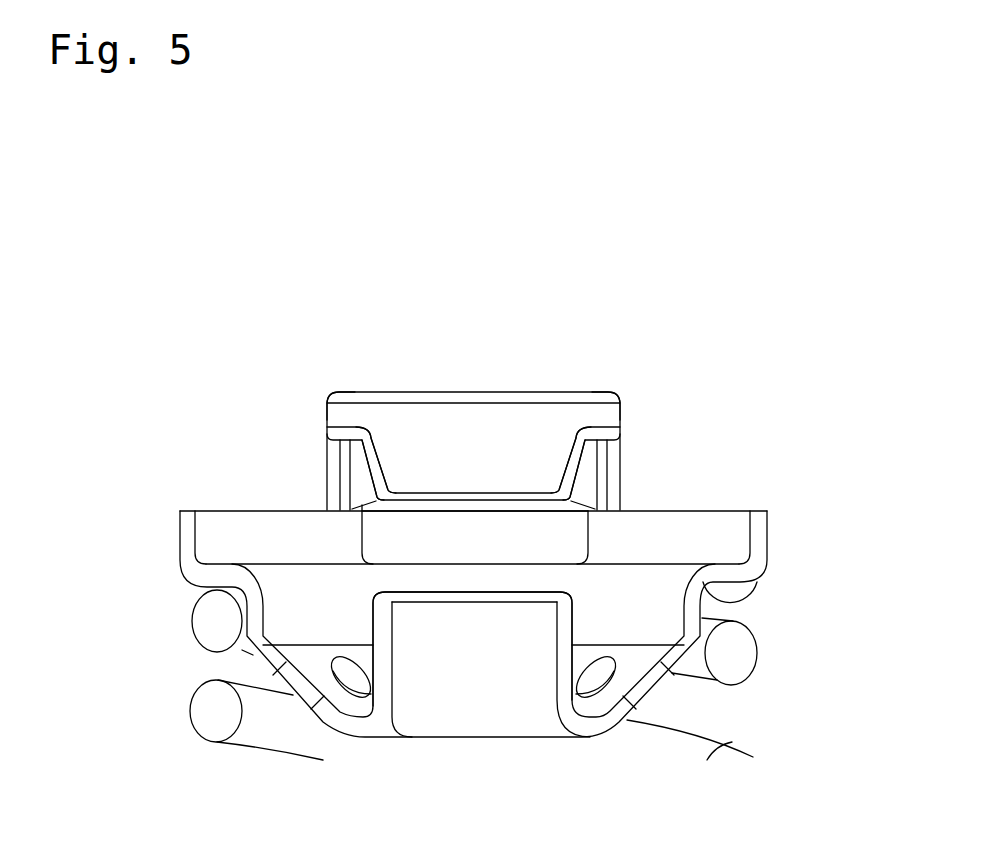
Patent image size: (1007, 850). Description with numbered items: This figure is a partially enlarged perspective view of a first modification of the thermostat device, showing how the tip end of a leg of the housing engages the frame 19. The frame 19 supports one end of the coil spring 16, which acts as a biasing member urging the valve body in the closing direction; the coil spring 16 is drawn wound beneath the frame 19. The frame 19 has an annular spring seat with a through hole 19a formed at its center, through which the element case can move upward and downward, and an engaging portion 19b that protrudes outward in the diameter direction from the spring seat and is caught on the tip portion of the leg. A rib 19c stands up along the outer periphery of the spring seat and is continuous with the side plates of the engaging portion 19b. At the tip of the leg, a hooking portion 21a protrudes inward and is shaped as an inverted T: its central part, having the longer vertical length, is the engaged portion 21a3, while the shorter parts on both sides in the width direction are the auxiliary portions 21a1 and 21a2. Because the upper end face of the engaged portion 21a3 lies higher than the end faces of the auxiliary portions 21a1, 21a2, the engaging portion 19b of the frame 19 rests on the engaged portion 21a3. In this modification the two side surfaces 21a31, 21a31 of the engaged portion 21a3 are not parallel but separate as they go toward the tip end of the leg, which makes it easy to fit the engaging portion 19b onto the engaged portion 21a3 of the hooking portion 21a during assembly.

The coil spring 16 is at (215, 720).
The frame 19 is at (250, 522).
The through hole 19a is at (420, 613).
The engaging portion 19b is at (524, 559).
The rib 19c is at (295, 527).
The hooking portion 21a is at (540, 398).
The auxiliary portion 21a1 is at (350, 415).
The auxiliary portion 21a2 is at (598, 412).
The engaged portion 21a3 is at (470, 465).
The side surfaces 21a31 is at (378, 466).